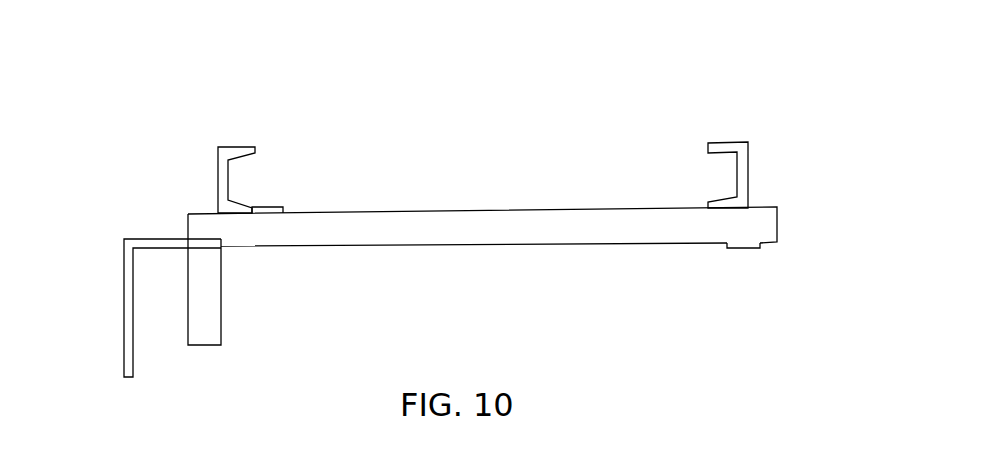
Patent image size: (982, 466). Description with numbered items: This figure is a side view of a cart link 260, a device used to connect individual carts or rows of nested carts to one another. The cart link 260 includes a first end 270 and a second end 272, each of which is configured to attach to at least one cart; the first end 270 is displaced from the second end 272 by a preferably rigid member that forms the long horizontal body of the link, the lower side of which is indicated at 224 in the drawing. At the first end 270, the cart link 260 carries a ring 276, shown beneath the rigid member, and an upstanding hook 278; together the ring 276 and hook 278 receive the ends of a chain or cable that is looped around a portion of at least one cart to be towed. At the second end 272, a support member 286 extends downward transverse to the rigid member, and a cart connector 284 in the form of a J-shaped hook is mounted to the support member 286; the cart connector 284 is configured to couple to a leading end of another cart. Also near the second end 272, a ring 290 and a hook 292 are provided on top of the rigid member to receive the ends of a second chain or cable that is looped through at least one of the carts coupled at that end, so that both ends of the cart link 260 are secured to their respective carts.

The cart link 260 is at (523, 64).
The first end 270 is at (783, 236).
The bottom surface of base plate 224 is at (505, 237).
The second end 272 is at (198, 212).
The hook 292 is at (230, 152).
The ring 290 is at (282, 205).
The hook 278 is at (744, 142).
The ring 276 is at (740, 250).
The support member 286 is at (215, 307).
The cart connector 284 is at (125, 352).